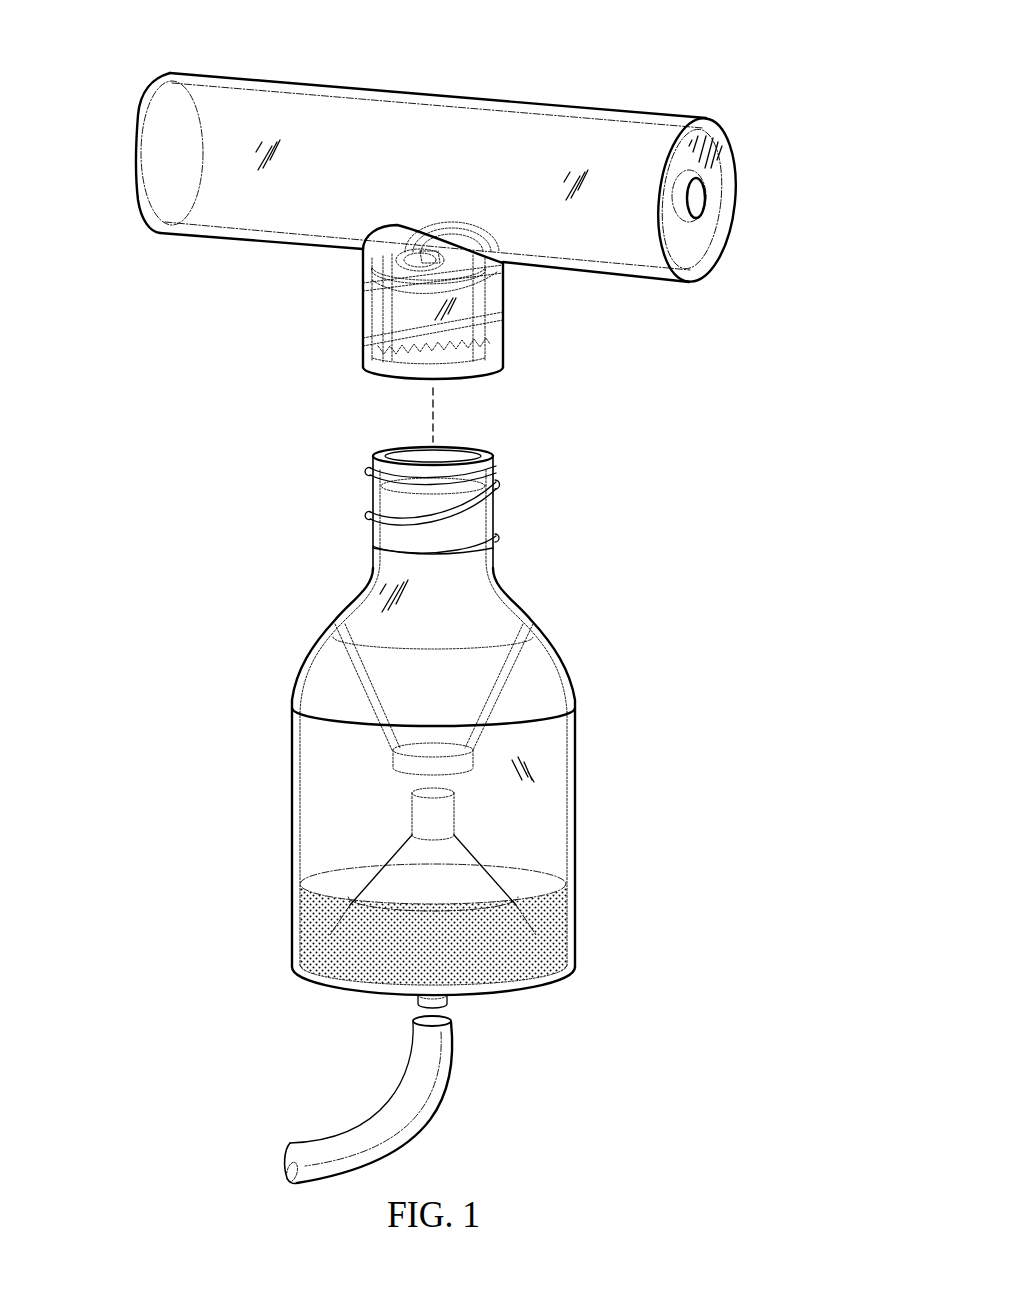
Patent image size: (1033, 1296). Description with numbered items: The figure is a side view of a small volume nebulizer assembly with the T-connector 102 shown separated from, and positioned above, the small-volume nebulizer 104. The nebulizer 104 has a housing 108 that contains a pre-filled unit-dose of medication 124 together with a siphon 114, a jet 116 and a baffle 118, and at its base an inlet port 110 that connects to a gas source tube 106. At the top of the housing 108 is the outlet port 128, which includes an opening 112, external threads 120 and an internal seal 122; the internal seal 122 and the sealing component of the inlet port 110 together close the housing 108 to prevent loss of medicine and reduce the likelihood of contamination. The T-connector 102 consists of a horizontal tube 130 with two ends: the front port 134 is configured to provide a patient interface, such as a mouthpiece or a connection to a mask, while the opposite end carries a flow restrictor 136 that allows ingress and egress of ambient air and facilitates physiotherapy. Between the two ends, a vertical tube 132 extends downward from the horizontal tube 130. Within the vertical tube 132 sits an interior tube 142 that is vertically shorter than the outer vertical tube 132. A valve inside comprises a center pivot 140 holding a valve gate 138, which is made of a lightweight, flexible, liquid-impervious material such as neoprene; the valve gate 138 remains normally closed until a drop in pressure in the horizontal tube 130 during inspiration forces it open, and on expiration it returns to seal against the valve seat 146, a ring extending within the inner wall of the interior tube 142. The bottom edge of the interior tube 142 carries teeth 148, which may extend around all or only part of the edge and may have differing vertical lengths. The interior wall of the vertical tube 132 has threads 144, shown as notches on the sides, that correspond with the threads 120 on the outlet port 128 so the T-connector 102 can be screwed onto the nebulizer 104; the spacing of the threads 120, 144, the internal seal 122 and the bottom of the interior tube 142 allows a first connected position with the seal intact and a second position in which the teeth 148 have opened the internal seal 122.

The T-connector 102 is at (690, 62).
The small-volume nebulizer 104 is at (274, 838).
The gas source tube 106 is at (358, 1128).
The housing 108 is at (577, 830).
The inlet port 110 is at (450, 1000).
The opening 112 is at (457, 460).
The siphon 114 is at (388, 862).
The jet 116 is at (412, 810).
The baffle 118 is at (441, 745).
The external threads 120 is at (373, 470).
The internal seal 122 is at (472, 482).
The medication 124 is at (500, 872).
The outlet port 128 is at (493, 514).
The horizontal tube 130 is at (500, 100).
The vertical tube 132 is at (506, 328).
The front port 134 is at (137, 152).
The flow restrictor 136 is at (700, 200).
The valve gate 138 is at (472, 212).
The center pivot 140 is at (430, 252).
The interior tube 142 is at (490, 290).
The threads 144 is at (373, 300).
The valve seat 146 is at (405, 278).
The teeth 148 is at (400, 355).